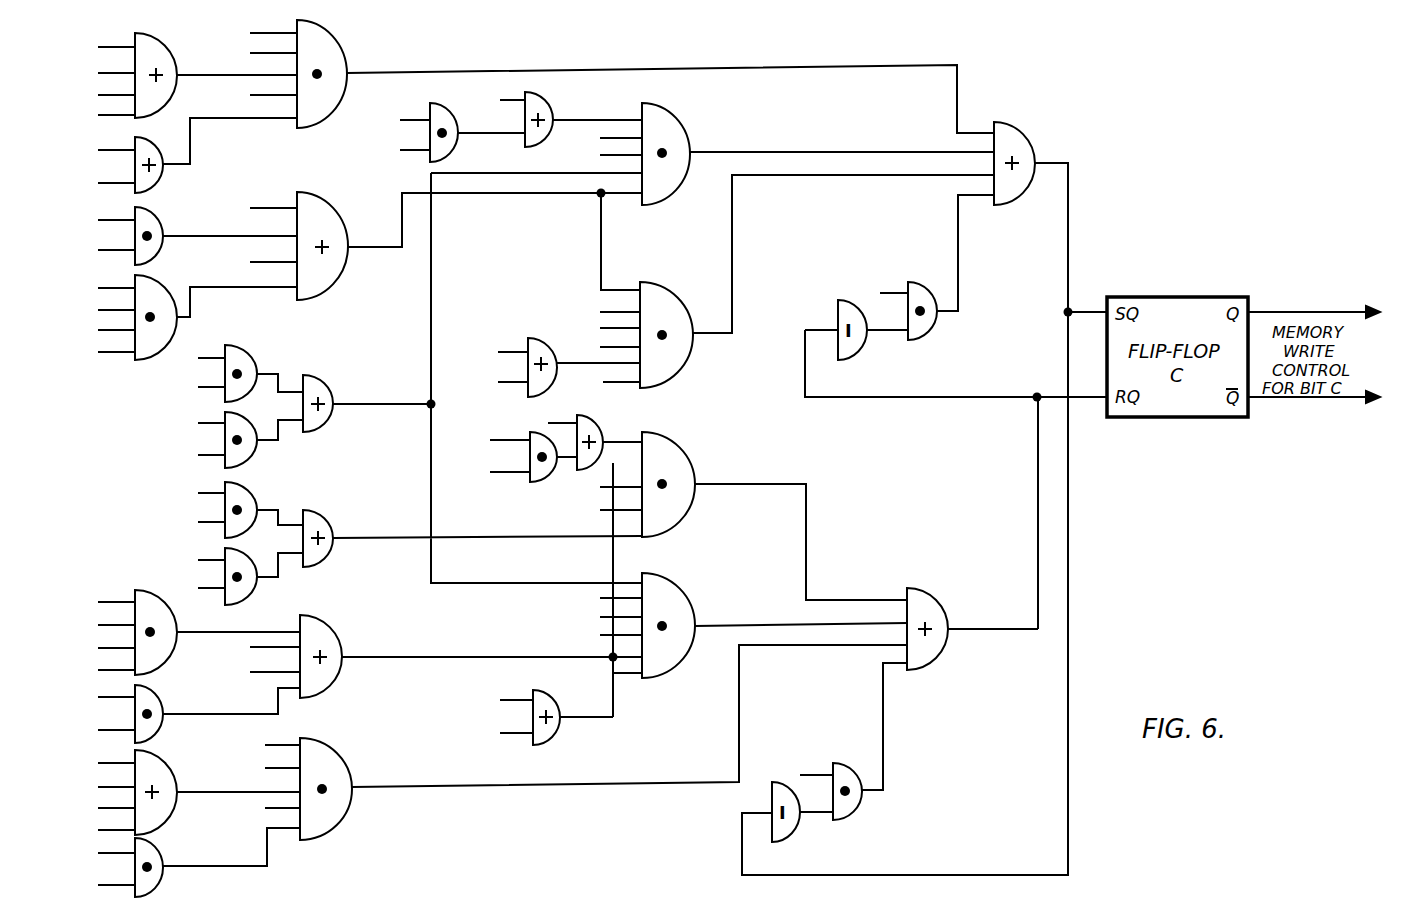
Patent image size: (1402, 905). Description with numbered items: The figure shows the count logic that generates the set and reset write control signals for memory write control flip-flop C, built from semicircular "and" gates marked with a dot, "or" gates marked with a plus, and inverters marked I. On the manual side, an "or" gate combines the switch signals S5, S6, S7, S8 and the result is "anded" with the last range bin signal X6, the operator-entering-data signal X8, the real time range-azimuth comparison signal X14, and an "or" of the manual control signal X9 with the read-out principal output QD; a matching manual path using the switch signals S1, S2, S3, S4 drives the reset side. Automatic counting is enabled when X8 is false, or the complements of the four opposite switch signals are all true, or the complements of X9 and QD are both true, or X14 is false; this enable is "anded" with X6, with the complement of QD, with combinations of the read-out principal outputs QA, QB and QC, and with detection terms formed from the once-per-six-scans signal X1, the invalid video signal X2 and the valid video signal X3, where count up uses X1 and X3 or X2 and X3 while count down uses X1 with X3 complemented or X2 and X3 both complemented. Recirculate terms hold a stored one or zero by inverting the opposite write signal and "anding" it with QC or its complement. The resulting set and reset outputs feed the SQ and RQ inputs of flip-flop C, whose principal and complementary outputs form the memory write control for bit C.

The manual switch entry signal S1 is at (80, 279).
The manual switch entry signal S2 is at (80, 301).
The manual switch entry signal S3 is at (80, 321).
The manual switch entry signal S4 is at (80, 343).
The manual switch entry signal S5 is at (80, 592).
The manual switch entry signal S6 is at (80, 615).
The manual switch entry signal S7 is at (80, 638).
The manual switch entry signal S8 is at (80, 660).
The scan timing signal X1 is at (200, 424).
The invalid video detected signal X2 is at (196, 550).
The valid video detected signal X3 is at (196, 578).
The last range bin signal X6 is at (431, 388).
The operator entering data signal X8 is at (236, 637).
The manual code bit control signal X9 is at (82, 687).
The real time range-azimuth comparison signal X14 is at (240, 662).
The principal output QA is at (496, 690).
The principal output QB is at (496, 723).
The principal output QC is at (798, 765).
The principal output QD is at (84, 720).